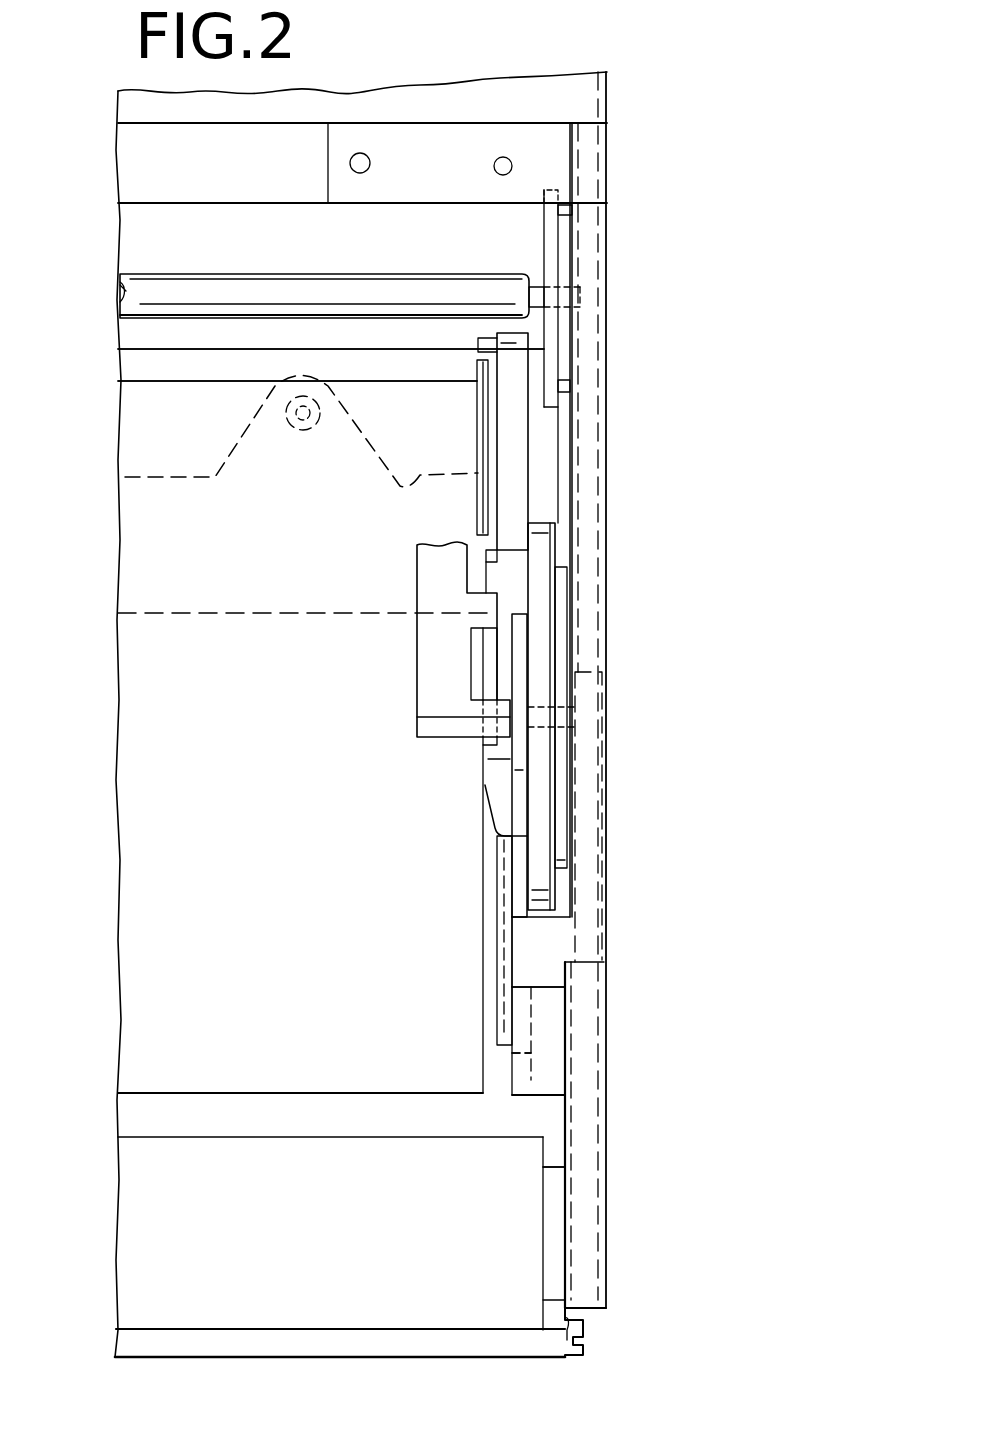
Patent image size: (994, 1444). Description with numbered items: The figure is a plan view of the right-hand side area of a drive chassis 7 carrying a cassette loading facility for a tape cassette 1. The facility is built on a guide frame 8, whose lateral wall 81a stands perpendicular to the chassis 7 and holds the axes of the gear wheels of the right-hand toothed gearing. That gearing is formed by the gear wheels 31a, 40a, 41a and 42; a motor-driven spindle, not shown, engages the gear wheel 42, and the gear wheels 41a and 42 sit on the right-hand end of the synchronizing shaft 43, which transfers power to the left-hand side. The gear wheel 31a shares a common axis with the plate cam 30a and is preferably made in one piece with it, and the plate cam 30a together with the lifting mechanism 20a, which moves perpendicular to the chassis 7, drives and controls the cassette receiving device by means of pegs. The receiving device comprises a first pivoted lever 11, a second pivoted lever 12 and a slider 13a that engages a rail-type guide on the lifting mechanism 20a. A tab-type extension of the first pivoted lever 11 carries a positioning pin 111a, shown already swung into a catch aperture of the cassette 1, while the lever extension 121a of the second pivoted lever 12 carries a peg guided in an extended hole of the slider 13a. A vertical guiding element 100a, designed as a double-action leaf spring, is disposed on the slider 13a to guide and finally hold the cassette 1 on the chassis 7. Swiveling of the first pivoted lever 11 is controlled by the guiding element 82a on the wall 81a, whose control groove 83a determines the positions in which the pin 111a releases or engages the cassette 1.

The cassette 1 is at (198, 863).
The chassis 7 is at (583, 87).
The guide frame 8 is at (555, 112).
The first pivoted lever 11 is at (160, 620).
The second pivoted lever 12 is at (130, 372).
The slider 13a is at (468, 762).
The lifting mechanism 20a is at (586, 930).
The plate cam 30a is at (542, 655).
The gear wheel 31a is at (560, 593).
The gear wheel 40a is at (563, 426).
The gear wheel 41a is at (562, 334).
The gear wheel 42 is at (550, 253).
The synchronizing shaft 43 is at (126, 283).
The lateral wall 81a is at (580, 1160).
The guiding element 82a is at (545, 1053).
The control groove 83a is at (518, 1032).
The vertical guiding element 100a is at (414, 664).
The positioning pin 111a is at (297, 430).
The lever extension 121a is at (492, 503).